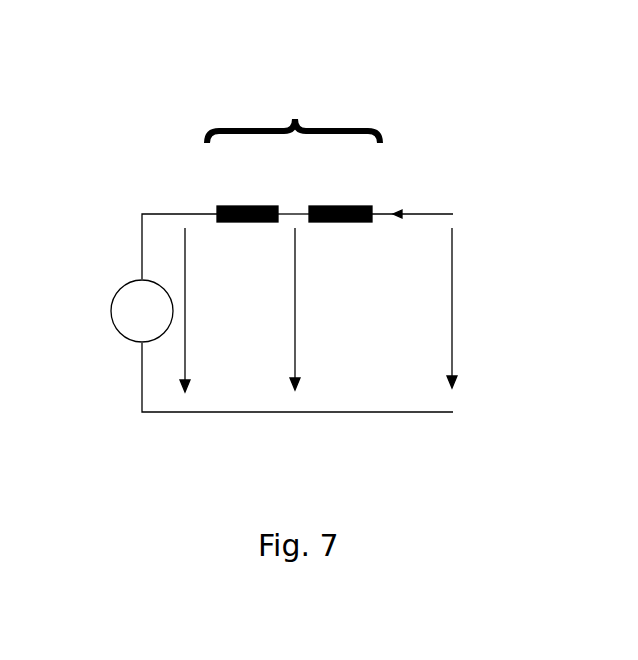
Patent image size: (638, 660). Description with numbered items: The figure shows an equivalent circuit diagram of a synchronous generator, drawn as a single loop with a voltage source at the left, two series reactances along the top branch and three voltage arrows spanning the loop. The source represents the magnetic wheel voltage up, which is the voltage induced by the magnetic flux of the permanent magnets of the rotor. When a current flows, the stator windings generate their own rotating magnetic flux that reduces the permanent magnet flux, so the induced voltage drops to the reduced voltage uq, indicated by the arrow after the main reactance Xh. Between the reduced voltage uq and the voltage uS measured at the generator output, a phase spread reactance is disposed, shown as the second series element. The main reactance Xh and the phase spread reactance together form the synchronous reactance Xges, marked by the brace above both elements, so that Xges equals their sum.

The synchronous reactance Xges is at (293, 99).
The main reactance Xh is at (248, 184).
The magnetic wheel voltage up is at (207, 310).
The reduced voltage uq is at (318, 309).
The output voltage uS is at (475, 308).